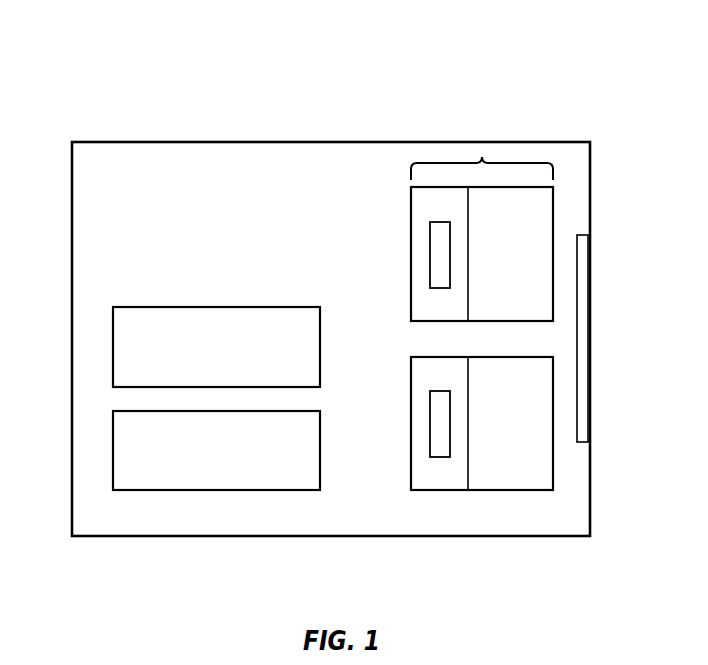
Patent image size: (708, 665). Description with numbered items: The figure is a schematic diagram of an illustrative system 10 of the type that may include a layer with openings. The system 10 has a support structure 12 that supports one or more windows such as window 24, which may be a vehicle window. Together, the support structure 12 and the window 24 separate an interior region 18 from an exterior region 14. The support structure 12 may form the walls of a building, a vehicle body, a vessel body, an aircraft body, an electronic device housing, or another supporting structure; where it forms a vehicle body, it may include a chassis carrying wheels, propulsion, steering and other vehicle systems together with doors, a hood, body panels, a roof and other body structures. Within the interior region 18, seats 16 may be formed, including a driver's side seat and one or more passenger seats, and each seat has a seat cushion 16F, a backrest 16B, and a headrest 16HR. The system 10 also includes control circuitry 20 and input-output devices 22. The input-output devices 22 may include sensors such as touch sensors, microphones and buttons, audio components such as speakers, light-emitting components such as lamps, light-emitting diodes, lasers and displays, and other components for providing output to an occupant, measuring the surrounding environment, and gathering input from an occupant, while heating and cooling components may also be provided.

The system 10 is at (552, 71).
The support structure 12 is at (591, 176).
The exterior region 14 is at (618, 408).
The seats 16 is at (482, 157).
The backrest 16B is at (420, 307).
The seat cushion 16F is at (485, 313).
The headrest 16HR is at (430, 253).
The interior region 18 is at (481, 498).
The control circuitry 20 is at (127, 350).
The input-output devices 22 is at (127, 455).
The window 24 is at (581, 328).